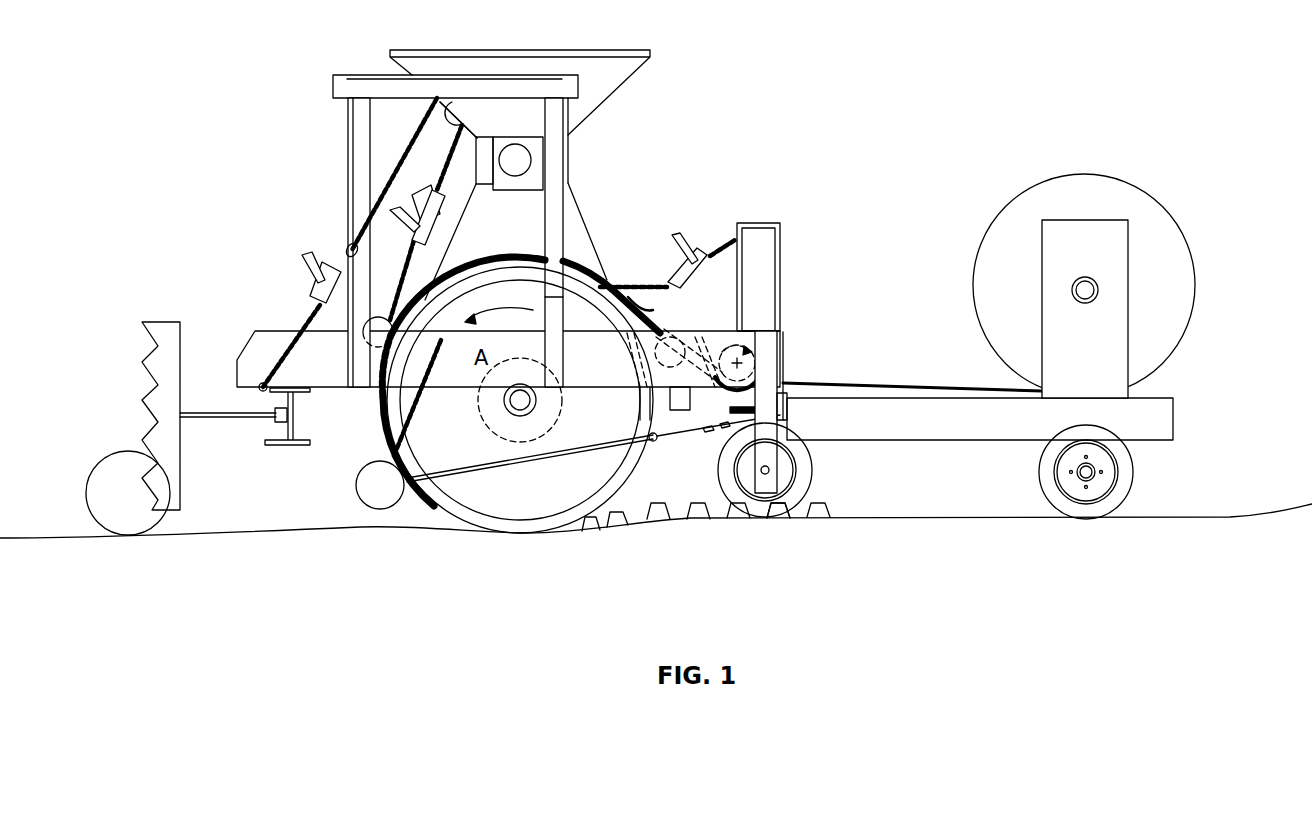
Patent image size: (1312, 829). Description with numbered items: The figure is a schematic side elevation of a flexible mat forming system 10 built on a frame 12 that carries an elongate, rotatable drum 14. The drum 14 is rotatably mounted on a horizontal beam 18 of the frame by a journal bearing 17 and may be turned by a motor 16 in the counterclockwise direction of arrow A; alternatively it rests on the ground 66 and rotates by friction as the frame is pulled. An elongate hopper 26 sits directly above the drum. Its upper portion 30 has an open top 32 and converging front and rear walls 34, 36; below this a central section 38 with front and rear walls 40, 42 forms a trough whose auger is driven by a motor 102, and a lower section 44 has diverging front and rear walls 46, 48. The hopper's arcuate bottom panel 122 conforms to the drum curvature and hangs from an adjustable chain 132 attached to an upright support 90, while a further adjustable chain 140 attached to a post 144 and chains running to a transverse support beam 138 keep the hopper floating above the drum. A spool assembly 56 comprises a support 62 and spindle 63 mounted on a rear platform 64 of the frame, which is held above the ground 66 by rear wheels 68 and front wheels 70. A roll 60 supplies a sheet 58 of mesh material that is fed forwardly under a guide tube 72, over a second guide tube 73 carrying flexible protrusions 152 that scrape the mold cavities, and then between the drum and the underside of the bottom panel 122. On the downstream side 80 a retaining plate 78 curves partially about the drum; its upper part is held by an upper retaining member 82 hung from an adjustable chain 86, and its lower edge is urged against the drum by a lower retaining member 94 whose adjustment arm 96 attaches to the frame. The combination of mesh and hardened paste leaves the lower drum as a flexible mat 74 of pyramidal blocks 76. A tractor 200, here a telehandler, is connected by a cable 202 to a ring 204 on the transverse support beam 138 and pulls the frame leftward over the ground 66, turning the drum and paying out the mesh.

The flexible mat forming system 10 is at (800, 205).
The frame 12 is at (1165, 413).
The drum 14 is at (610, 460).
The motor 16 is at (573, 428).
The journal bearing 17 is at (500, 418).
The horizontal beam 18 is at (443, 377).
The hopper 26 is at (585, 207).
The upper portion 30 is at (613, 80).
The open top 32 is at (593, 48).
The front wall 34 is at (602, 115).
The rear wall 36 is at (440, 103).
The central section 38 is at (422, 122).
The front wall 40 is at (468, 153).
The rear wall 42 is at (577, 164).
The lower section 44 is at (596, 230).
The front wall 46 is at (443, 258).
The rear wall 48 is at (588, 257).
The spool assembly 56 is at (1175, 214).
The sheet of mesh material 58 is at (880, 385).
The roll 60 is at (1125, 193).
The support 62 is at (1128, 300).
The spindle 63 is at (1072, 291).
The rear platform 64 is at (1160, 434).
The ground 66 is at (1238, 518).
The rear wheels 68 is at (1123, 470).
The front wheels 70 is at (803, 479).
The guide tube 72 is at (757, 351).
The second guide tube 73 is at (673, 347).
The flexible mat 74 is at (739, 516).
The blocks 76 is at (785, 516).
The retaining plate 78 is at (376, 440).
The downstream side 80 is at (370, 425).
The upper retaining member 82 is at (367, 337).
The adjustable cable or chain 86 is at (433, 208).
The upright support 90 is at (362, 80).
The lower retaining member 94 is at (377, 520).
The adjustment arm 96 is at (520, 458).
The motor 102 is at (502, 184).
The bottom panel 122 is at (644, 310).
The adjustable cable or chain 132 is at (535, 110).
The transverse support beam 138 is at (287, 424).
The adjustable cable or chain 140 is at (720, 256).
The post 144 is at (768, 282).
The protrusions 152 is at (630, 367).
The tractor 200 is at (160, 322).
The cable 202 is at (186, 413).
The ring 204 is at (273, 410).